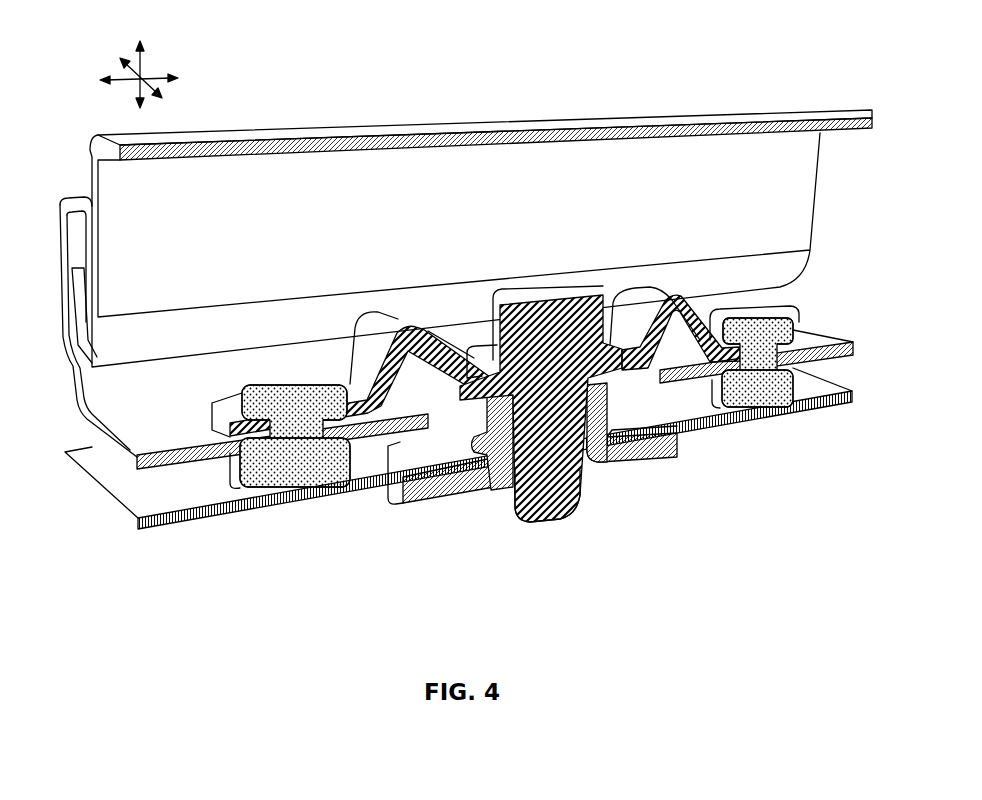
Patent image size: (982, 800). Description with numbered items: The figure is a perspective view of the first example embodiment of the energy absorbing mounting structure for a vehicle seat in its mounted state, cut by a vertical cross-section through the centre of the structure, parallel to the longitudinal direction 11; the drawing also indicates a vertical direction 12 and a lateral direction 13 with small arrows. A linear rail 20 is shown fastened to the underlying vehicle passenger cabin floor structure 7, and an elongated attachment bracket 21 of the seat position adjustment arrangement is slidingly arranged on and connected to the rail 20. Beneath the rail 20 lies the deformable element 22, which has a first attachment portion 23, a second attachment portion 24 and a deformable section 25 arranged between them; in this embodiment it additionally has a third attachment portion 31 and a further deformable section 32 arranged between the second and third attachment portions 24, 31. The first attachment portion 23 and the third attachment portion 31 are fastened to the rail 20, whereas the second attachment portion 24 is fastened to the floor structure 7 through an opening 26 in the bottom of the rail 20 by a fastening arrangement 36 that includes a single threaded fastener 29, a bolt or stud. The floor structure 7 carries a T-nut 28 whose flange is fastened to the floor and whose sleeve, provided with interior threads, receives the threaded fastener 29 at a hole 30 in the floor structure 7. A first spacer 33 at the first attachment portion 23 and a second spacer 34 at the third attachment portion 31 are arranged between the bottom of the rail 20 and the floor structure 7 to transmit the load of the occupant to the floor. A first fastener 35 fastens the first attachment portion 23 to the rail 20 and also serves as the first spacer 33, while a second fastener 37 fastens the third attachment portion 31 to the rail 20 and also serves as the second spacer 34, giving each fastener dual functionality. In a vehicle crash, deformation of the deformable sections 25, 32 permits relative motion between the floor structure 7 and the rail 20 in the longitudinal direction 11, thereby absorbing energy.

The vehicle passenger cabin floor structure 7 is at (178, 520).
The longitudinal direction 11 is at (153, 83).
The second direction 12 is at (144, 59).
The third direction 13 is at (155, 86).
The rail 20 is at (147, 500).
The attachment bracket 21 is at (485, 137).
The deformable element 22 is at (431, 310).
The first attachment portion 23 is at (243, 500).
The second attachment portion 24 is at (650, 462).
The deformable section 25 is at (396, 326).
The opening 26 is at (427, 500).
The T-nut 28 is at (491, 492).
The threaded fastener 29 is at (573, 492).
The hole 30 is at (470, 500).
The third attachment portion 31 is at (788, 384).
The further deformable section 32 is at (660, 290).
The first spacer 33 is at (323, 490).
The second spacer 34 is at (747, 402).
The first fastener 35 is at (288, 384).
The fastening arrangement 36 is at (554, 262).
The second fastener 37 is at (748, 316).